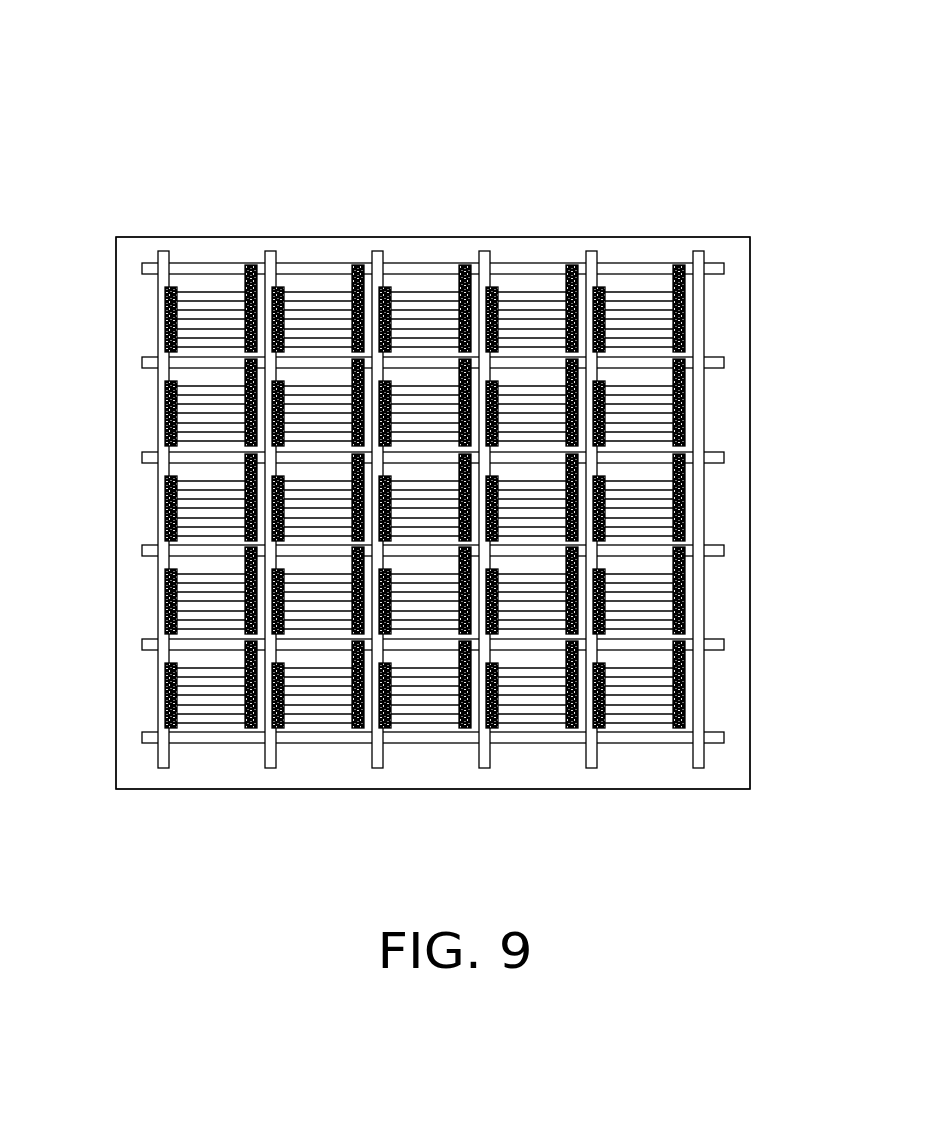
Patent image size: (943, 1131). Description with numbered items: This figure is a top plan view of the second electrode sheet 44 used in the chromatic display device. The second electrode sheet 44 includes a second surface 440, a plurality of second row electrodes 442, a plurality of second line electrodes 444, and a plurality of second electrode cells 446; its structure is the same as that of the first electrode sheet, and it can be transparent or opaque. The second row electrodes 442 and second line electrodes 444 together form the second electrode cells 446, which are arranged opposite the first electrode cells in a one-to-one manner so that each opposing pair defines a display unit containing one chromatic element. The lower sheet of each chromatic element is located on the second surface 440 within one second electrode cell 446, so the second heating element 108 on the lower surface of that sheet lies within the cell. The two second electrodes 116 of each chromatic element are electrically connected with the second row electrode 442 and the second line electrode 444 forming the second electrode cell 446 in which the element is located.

The second electrode sheet 44 is at (435, 77).
The second surface 440 is at (438, 245).
The second row electrodes 442 is at (717, 362).
The second line electrodes 444 is at (700, 302).
The second electrode cells 446 is at (638, 282).
The second electrodes 116 is at (253, 280).
The second heating element 108 is at (304, 288).